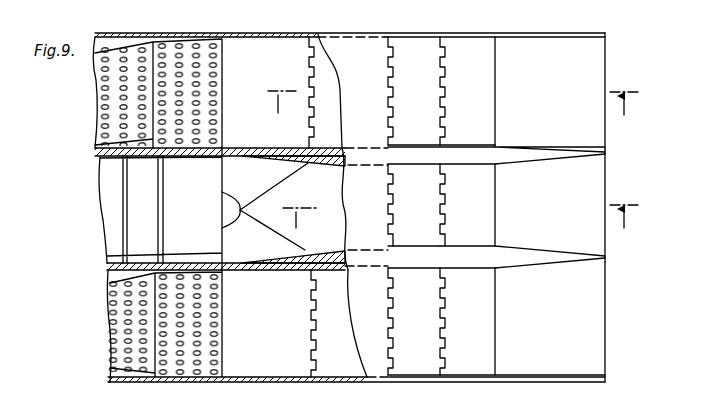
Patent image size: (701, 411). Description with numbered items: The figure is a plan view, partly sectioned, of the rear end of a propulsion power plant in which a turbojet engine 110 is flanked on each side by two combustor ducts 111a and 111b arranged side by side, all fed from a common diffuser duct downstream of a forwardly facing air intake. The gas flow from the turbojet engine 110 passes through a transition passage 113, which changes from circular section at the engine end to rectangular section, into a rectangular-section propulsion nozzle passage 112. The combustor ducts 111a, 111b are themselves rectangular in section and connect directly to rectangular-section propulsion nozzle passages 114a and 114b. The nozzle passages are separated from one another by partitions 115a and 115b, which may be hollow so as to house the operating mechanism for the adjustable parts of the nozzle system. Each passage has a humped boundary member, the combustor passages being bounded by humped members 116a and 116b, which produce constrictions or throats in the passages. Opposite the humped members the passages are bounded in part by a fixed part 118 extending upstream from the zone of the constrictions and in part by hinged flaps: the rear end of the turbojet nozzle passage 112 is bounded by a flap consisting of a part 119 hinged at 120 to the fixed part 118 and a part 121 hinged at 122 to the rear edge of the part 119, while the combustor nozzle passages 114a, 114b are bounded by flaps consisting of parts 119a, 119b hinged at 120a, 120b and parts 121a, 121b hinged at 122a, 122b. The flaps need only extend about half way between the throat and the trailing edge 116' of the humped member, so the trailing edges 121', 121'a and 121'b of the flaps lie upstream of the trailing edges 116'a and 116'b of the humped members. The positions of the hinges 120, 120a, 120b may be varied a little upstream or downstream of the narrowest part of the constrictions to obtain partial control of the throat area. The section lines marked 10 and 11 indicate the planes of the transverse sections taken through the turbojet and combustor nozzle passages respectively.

The section line 10- 10 is at (460, 222).
The section line 11- 11 is at (448, 111).
The turbojet engine 110 is at (203, 225).
The combustor duct 111a is at (95, 98).
The combustor duct 111b is at (108, 318).
The propulsion nozzle passage 112 is at (335, 199).
The transition passage 113 is at (284, 230).
The propulsion nozzle passage 114a is at (338, 106).
The propulsion nozzle passage 114b is at (345, 333).
The partition 115a is at (340, 158).
The partition 115b is at (344, 270).
The humped boundary member 116a is at (318, 40).
The humped boundary member 116b is at (343, 377).
The trailing edge 116' is at (624, 206).
The trailing edge 116'a is at (629, 81).
The trailing edge 116'b is at (629, 322).
The fixed part 118 is at (371, 42).
The flap part 119 is at (425, 190).
The flap part 119a is at (430, 72).
The flap part 119b is at (434, 299).
The hinge 120 is at (390, 210).
The hinge 120a is at (390, 96).
The hinge 120b is at (390, 326).
The flap part 121 is at (467, 205).
The flap part 121a is at (480, 72).
The flap part 121b is at (482, 299).
The trailing edge 121' is at (550, 211).
The trailing edge 121'a is at (496, 81).
The trailing edge 121'b is at (526, 321).
The hinge 122 is at (442, 208).
The hinge 122a is at (446, 125).
The hinge 122b is at (442, 313).